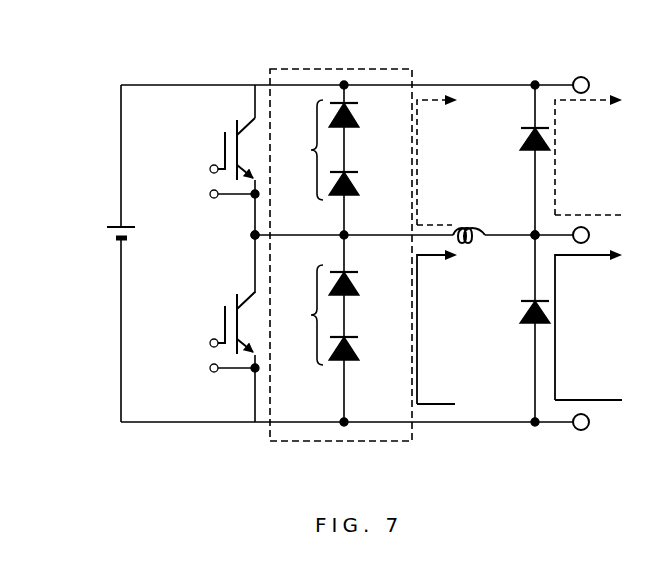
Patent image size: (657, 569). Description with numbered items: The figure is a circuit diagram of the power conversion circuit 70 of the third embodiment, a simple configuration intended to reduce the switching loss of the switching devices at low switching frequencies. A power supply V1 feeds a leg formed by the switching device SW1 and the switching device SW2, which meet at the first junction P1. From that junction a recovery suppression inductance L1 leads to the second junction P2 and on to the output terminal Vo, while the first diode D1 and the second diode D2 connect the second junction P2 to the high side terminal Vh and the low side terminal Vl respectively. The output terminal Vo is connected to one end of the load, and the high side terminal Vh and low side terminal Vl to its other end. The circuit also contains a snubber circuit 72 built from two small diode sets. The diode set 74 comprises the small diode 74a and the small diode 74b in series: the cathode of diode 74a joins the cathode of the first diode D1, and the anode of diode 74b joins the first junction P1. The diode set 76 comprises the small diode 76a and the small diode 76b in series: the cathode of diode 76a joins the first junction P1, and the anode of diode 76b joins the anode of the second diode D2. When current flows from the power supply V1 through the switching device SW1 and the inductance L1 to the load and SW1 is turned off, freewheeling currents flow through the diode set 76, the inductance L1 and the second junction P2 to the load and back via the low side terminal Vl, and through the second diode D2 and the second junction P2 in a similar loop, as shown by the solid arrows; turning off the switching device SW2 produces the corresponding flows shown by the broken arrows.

The power conversion circuit 70 is at (58, 89).
The snubber circuit 72 is at (369, 69).
The diode set 74 is at (302, 150).
The small diode 74a is at (362, 120).
The small diode 74b is at (362, 187).
The diode set 76 is at (304, 315).
The small diode 76a is at (362, 287).
The small diode 76b is at (362, 353).
The switching device SW1 is at (214, 150).
The switching device SW2 is at (214, 324).
The first junction P1 is at (251, 239).
The second junction P2 is at (533, 240).
The power supply V1 is at (105, 236).
The recovery suppression inductance L1 is at (467, 225).
The first diode D1 is at (511, 141).
The second diode D2 is at (514, 311).
The high side terminal Vh is at (595, 75).
The output terminal Vo is at (596, 237).
The low side terminal Vl is at (592, 424).